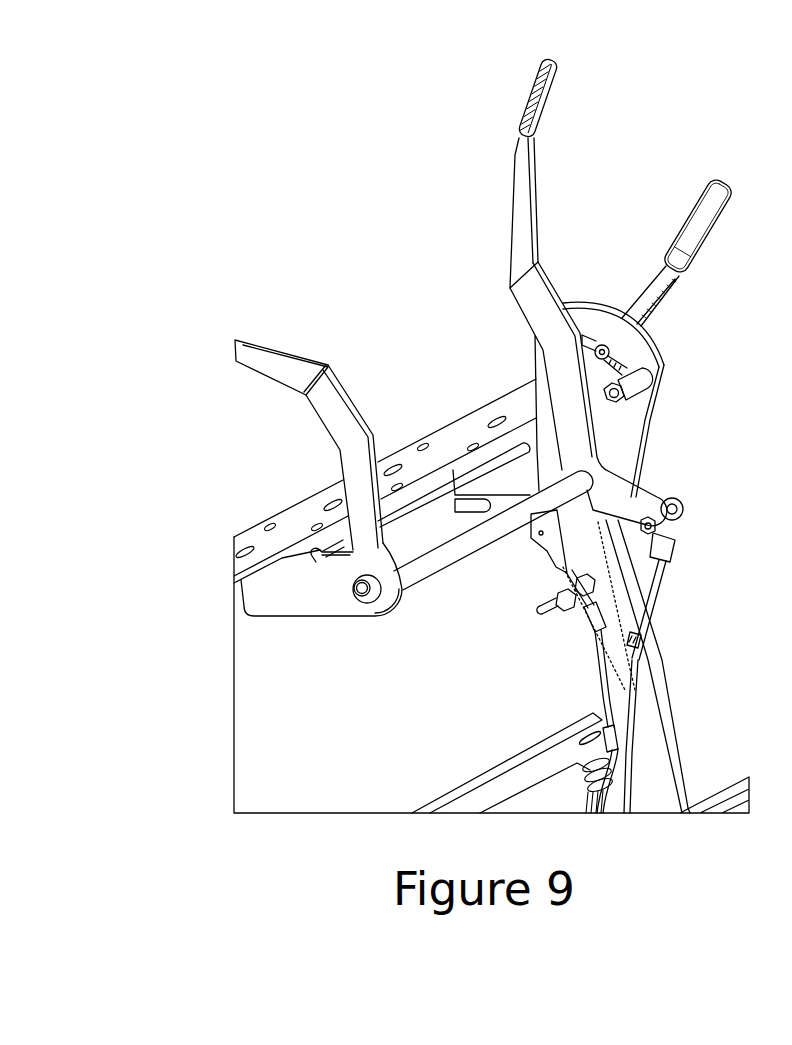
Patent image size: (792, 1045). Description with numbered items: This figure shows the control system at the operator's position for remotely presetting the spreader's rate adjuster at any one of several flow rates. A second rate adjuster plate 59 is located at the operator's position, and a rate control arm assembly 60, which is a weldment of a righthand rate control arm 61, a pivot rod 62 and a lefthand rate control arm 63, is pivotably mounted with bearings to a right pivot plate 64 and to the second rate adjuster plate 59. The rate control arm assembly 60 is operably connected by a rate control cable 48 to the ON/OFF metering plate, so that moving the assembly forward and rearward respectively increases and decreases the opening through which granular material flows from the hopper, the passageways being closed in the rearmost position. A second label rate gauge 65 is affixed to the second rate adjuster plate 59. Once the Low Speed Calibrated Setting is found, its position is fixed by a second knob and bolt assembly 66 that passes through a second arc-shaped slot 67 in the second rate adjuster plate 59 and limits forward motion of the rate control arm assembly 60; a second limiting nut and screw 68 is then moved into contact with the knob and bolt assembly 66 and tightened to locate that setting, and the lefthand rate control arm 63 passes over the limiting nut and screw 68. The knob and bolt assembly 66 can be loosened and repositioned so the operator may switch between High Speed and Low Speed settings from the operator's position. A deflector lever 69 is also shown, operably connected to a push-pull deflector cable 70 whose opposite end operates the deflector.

The rate control cable 48 is at (662, 586).
The second rate adjuster plate 59 is at (656, 412).
The rate control arm assembly 60 is at (513, 231).
The righthand rate control arm 61 is at (289, 351).
The pivot rod 62 is at (434, 570).
The lefthand rate control arm 63 is at (662, 489).
The right pivot plate 64 is at (293, 618).
The second label rate gauge 65 is at (615, 309).
The second knob and bolt assembly 66 is at (652, 379).
The second arc-shaped slot 67 is at (585, 333).
The second limiting nut and screw 68 is at (612, 347).
The deflector lever 69 is at (673, 291).
The push-pull deflector cable 70 is at (548, 569).